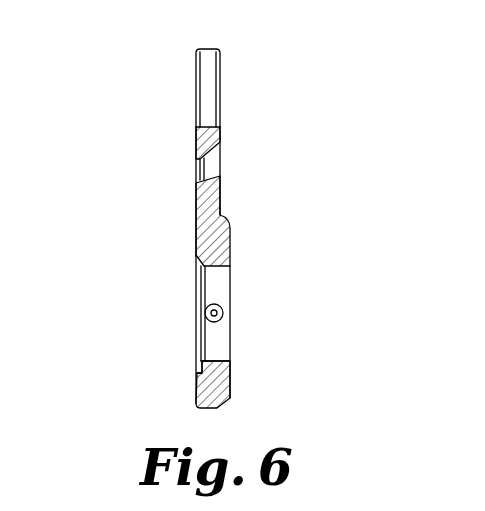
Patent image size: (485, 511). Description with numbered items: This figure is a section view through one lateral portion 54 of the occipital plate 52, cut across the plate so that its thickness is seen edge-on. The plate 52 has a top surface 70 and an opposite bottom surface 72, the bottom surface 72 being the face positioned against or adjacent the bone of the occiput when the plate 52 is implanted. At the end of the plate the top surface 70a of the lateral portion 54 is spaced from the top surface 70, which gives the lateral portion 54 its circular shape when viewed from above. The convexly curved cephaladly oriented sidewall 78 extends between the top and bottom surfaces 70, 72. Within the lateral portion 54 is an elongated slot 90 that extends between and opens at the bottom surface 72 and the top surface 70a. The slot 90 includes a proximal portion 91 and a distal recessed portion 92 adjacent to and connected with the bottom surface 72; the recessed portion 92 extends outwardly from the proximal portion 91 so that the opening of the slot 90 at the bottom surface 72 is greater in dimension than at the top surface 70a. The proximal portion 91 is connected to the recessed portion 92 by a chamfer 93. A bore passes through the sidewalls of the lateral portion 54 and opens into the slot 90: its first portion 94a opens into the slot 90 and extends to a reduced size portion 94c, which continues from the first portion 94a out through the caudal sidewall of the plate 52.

The plate 52 is at (258, 97).
The cephaladly oriented sidewall 78 is at (207, 80).
The bottom surface 72 is at (196, 216).
The top surface 70 is at (219, 200).
The lateral portion 54 is at (228, 248).
The chamfer 93 is at (196, 275).
The elongated slot 90 is at (223, 277).
The first portion of bore 94a is at (222, 305).
The reduced size portion of bore 94c is at (206, 316).
The proximal portion of slot 91 is at (213, 360).
The distal recessed portion 92 is at (200, 367).
The top surface of lateral portion 70a is at (231, 381).